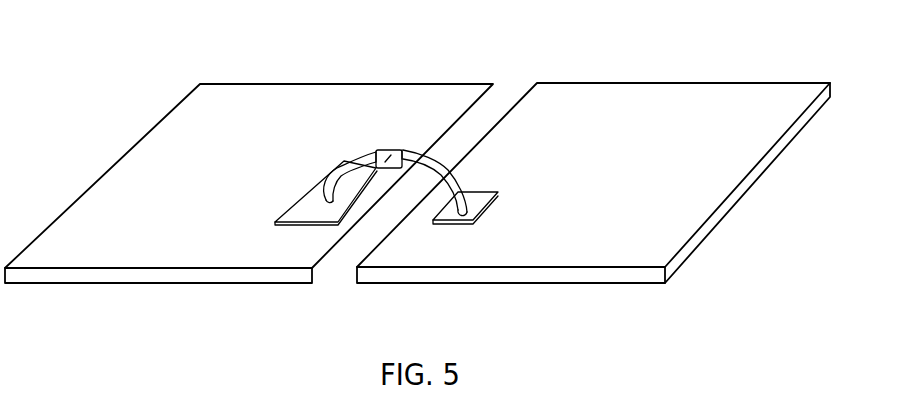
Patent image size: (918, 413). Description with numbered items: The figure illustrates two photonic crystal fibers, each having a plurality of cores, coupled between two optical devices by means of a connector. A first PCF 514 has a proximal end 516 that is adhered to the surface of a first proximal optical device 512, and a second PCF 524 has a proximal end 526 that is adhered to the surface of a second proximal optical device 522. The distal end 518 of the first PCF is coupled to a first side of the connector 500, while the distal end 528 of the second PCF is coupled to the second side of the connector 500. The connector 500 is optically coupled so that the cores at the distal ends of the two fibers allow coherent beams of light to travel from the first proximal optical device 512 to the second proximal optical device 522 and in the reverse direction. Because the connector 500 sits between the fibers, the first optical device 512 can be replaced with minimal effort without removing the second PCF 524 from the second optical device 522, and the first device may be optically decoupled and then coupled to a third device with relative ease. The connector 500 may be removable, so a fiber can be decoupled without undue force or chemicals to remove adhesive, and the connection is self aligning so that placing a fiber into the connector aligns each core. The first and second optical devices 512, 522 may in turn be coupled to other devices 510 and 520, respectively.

The connector 500 is at (392, 148).
The other device 510 is at (148, 152).
The other device 520 is at (753, 92).
The first proximal optical device 512 is at (288, 217).
The second proximal optical device 522 is at (487, 194).
The first PCF 514 is at (358, 156).
The second PCF 524 is at (459, 183).
The proximal end of the first PCF 516 is at (320, 206).
The proximal end of the second PCF 526 is at (468, 207).
The distal end of the first PCF 518 is at (375, 149).
The distal end of the second PCF 528 is at (405, 150).